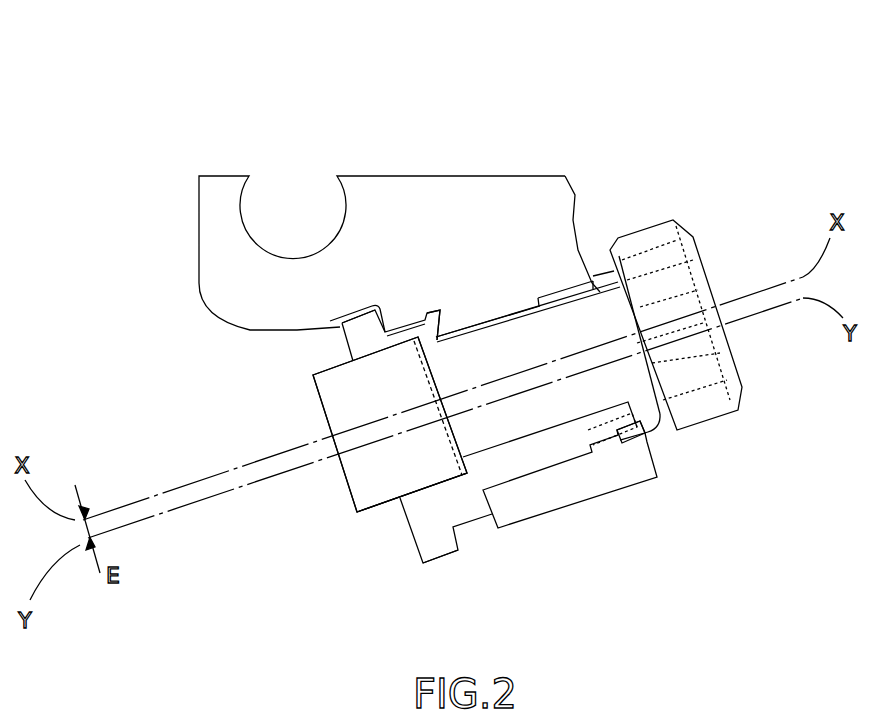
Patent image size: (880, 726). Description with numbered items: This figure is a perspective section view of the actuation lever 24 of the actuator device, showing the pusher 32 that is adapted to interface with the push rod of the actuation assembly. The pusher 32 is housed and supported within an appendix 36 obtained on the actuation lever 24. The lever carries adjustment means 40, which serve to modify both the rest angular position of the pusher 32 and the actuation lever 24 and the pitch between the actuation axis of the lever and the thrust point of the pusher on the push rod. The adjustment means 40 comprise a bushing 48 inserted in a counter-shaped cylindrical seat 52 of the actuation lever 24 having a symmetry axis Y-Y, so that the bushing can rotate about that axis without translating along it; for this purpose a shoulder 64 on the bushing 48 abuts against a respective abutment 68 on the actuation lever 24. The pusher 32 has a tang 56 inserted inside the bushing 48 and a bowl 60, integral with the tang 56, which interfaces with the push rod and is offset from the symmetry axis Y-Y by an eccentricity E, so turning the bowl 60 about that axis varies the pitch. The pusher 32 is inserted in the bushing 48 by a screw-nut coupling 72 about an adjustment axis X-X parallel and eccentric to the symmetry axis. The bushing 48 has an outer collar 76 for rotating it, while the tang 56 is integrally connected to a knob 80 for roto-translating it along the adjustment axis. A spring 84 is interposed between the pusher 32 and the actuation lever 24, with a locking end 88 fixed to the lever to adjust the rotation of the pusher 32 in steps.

The actuation lever 24 is at (215, 195).
The pusher 32 is at (360, 393).
The appendix 36 is at (567, 487).
The adjustment means 40 is at (380, 531).
The bushing 48 is at (463, 507).
The cylindrical seat 52 is at (498, 318).
The tang 56 is at (577, 327).
The bowl 60 is at (357, 473).
The shoulder 64 is at (340, 326).
The abutment 68 is at (383, 322).
The screw-nut coupling 72 is at (523, 316).
The outer collar 76 is at (423, 563).
The knob 80 is at (700, 257).
The spring 84 is at (637, 235).
The locking end 88 is at (660, 430).